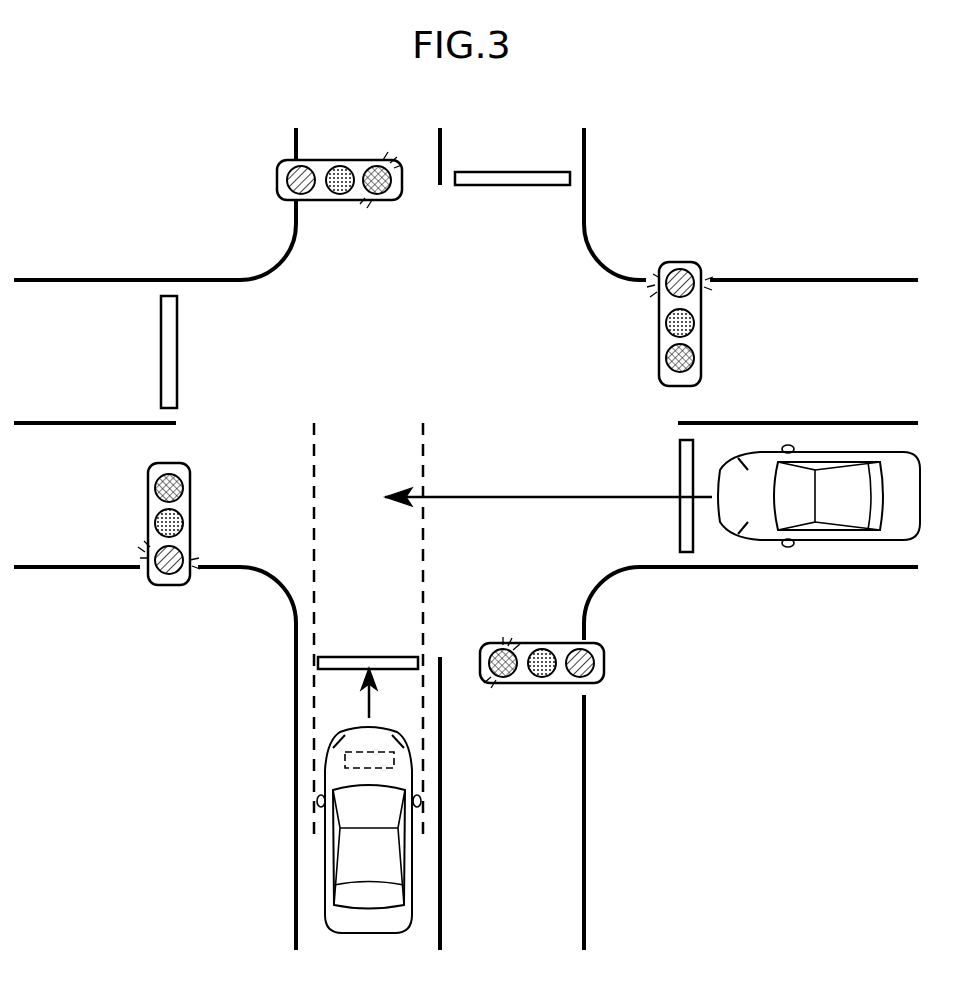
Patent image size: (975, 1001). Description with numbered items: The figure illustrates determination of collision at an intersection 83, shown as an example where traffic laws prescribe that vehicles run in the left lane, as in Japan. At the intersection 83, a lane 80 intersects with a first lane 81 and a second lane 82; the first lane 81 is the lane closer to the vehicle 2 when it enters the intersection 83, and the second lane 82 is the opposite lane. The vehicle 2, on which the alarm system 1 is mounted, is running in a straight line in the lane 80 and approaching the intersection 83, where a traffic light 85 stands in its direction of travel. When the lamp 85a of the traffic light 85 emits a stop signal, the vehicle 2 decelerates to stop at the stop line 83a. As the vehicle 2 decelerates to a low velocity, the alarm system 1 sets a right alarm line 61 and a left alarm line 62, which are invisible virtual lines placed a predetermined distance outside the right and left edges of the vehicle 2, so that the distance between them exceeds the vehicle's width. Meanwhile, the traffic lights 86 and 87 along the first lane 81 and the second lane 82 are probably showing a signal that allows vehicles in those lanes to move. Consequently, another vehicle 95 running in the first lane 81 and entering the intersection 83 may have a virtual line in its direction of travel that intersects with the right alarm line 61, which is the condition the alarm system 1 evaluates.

The alarm system 1 is at (345, 758).
The vehicle 2 is at (330, 849).
The right alarm line 61 is at (423, 578).
The left alarm line 62 is at (313, 603).
The lane 80 is at (330, 949).
The first lane 81 is at (903, 556).
The second lane 82 is at (896, 312).
The intersection 83 is at (498, 372).
The stop line 83a is at (318, 681).
The traffic light 85 is at (337, 160).
The lamp 85a is at (390, 188).
The traffic light 86 is at (165, 588).
The traffic light 87 is at (682, 262).
The other vehicle 95 is at (800, 540).